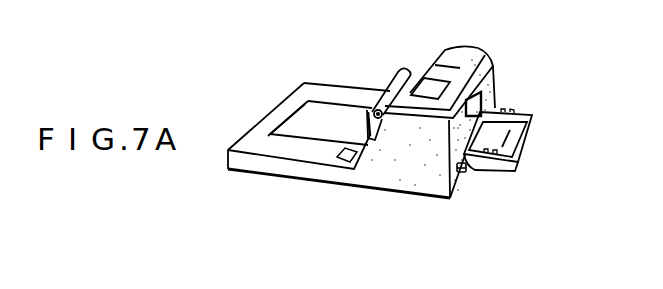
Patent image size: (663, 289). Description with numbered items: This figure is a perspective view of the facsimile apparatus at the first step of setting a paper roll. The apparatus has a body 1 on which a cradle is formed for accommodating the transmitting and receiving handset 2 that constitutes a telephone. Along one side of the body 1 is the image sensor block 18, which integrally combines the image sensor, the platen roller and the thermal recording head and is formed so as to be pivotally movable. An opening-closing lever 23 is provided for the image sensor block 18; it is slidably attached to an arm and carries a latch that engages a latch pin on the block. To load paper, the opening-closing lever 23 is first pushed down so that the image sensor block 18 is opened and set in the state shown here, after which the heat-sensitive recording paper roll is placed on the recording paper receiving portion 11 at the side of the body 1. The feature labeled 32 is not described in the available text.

The body 1 is at (398, 180).
The transmitting and receiving handset 2 is at (462, 53).
The image sensor block 18 is at (395, 85).
The recess 32 is at (308, 132).
The recording paper receiving portion 11 is at (530, 138).
The opening-closing lever 23 is at (466, 175).